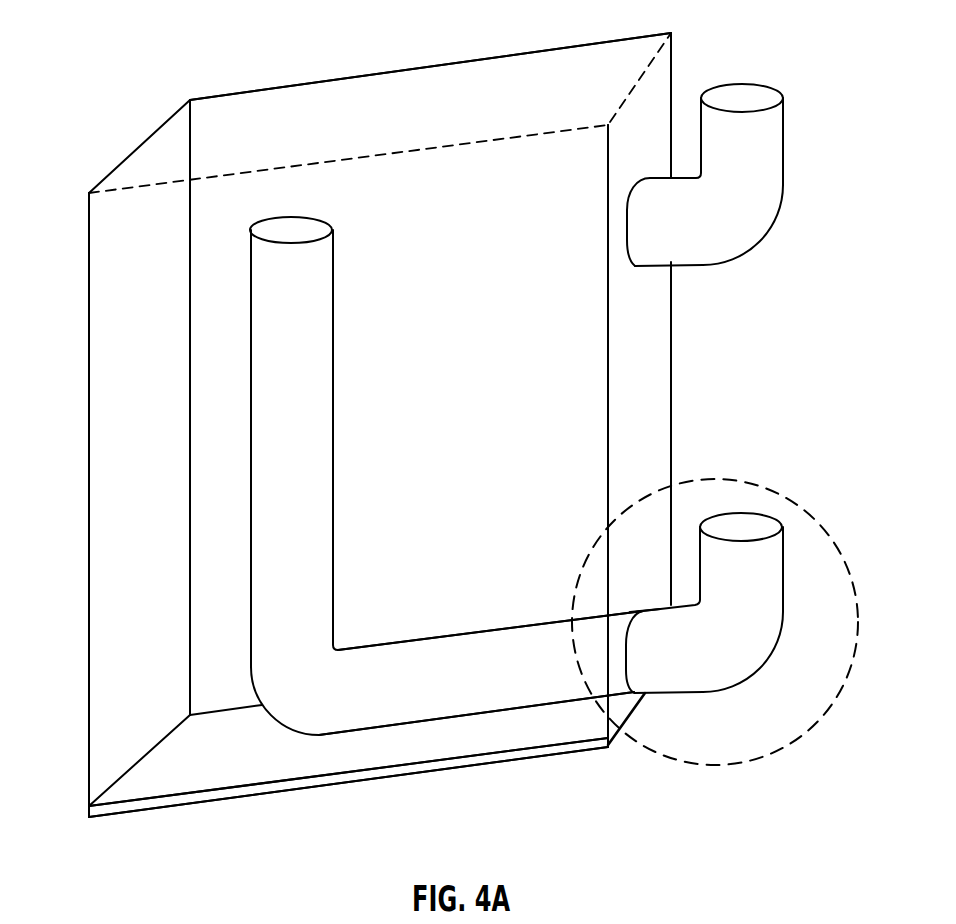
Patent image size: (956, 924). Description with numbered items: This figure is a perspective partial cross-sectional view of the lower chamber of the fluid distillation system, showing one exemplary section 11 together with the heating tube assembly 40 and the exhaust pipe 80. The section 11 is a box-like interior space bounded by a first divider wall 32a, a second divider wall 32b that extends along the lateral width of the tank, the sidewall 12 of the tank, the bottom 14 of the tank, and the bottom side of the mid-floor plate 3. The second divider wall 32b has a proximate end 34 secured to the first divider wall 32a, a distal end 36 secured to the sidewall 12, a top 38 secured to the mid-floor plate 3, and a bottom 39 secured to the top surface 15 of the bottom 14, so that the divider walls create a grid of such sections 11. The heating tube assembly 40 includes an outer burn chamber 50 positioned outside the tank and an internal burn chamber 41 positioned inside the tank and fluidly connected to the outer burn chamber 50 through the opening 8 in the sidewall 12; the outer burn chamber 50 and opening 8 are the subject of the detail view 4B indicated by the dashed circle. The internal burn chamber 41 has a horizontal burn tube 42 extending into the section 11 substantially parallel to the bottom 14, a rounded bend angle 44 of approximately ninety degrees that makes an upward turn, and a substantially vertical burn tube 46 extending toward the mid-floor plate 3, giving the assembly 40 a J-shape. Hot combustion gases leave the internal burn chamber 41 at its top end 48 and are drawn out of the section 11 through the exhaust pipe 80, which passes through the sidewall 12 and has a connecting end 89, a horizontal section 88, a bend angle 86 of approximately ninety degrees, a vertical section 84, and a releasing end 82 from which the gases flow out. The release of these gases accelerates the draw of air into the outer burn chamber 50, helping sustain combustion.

The mid-floor plate 3 is at (168, 152).
The section 11 is at (108, 272).
The sidewall 12 is at (657, 410).
The bottom 14 is at (453, 762).
The top surface 15 is at (570, 740).
The first divider wall 32a is at (87, 437).
The second divider wall 32b is at (398, 67).
The proximate end 34 is at (190, 127).
The distal end 36 is at (670, 122).
The top 38 is at (515, 57).
The bottom 39 is at (238, 705).
The heating tube assembly 40 is at (340, 407).
The internal burn chamber 41 is at (318, 502).
The horizontal burn tube 42 is at (520, 637).
The bend angle 44 is at (395, 712).
The vertical burn tube 46 is at (278, 498).
The top end 48 is at (290, 227).
The outer burn chamber 50 is at (765, 578).
The opening 8 is at (636, 612).
The exhaust pipe 80 is at (792, 182).
The releasing end 82 is at (750, 93).
The vertical section 84 is at (785, 138).
The bend angle 86 is at (762, 217).
The horizontal section 88 is at (687, 245).
The connecting end 89 is at (627, 223).
The detail view circle 4B is at (780, 495).